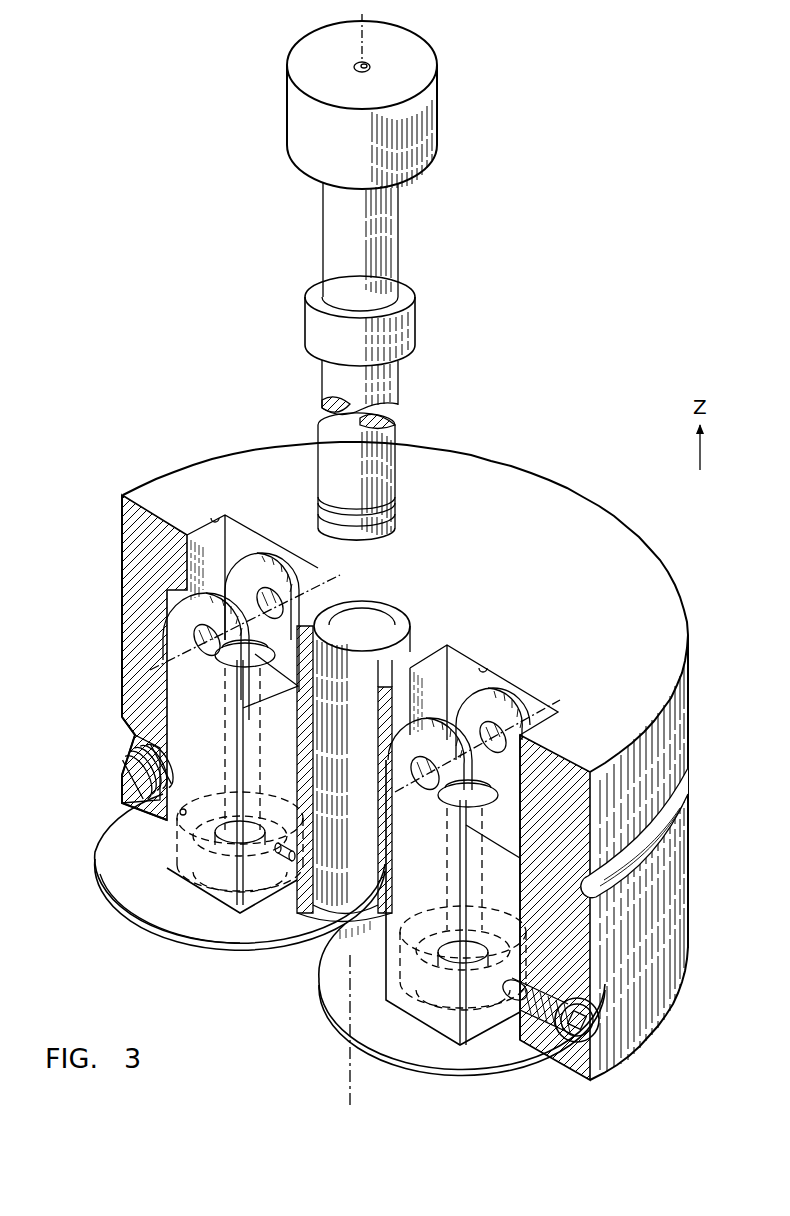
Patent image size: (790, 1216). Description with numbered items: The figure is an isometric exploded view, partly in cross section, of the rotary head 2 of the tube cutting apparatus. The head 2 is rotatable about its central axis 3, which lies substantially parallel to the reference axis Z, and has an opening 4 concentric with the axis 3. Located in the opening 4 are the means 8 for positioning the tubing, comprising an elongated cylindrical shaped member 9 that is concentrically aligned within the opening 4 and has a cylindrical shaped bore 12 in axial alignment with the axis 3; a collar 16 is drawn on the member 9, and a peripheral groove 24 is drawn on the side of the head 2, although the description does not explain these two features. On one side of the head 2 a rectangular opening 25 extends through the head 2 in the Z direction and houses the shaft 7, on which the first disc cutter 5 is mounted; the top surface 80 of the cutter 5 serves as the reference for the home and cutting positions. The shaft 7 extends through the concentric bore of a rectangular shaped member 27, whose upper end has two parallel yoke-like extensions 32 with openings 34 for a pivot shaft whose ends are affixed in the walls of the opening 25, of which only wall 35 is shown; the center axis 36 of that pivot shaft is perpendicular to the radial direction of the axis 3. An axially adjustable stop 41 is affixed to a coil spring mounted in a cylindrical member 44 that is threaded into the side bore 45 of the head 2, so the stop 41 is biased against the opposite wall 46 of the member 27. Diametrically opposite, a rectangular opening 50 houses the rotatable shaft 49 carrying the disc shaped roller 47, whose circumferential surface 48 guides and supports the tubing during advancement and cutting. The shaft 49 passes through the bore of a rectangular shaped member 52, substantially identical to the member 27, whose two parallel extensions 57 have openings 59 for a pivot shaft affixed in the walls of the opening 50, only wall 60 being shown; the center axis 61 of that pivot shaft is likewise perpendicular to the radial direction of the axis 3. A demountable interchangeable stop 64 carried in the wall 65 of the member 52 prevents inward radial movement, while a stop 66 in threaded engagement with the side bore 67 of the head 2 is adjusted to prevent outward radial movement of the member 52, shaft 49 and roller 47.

The head 2 is at (689, 720).
The central axis 3 is at (356, 10).
The opening 4 is at (378, 660).
The first disc cutter 5 is at (447, 1074).
The shaft 7 is at (447, 887).
The means for positioning the tubing 8 is at (440, 108).
The elongated cylindrical shaped member 9 is at (399, 232).
The cylindrical shaped bore 12 is at (370, 66).
The collar 16 is at (408, 324).
The circumferential slot 24 is at (676, 812).
The rectangular opening 25 is at (486, 669).
The rectangular shaped member 27 is at (498, 855).
The extensions 32 is at (500, 704).
The openings 34 is at (482, 736).
The wall 35 is at (470, 685).
The center axis 36 is at (392, 788).
The axially adjustable stop 41 is at (512, 995).
The cylindrical member 44 is at (545, 1040).
The side bore 45 is at (600, 1021).
The opposite wall 46 is at (513, 893).
The disc shaped roller 47 is at (120, 877).
The circumferential surface 48 is at (199, 944).
The rotatable shaft 49 is at (226, 744).
The rectangular opening 50 is at (216, 522).
The rectangular shaped member 52 is at (181, 814).
The extensions 57 is at (270, 570).
The openings 59 is at (214, 654).
The wall 60 is at (250, 553).
The center axis 61 is at (258, 612).
The demountable interchangeable stop 64 is at (285, 862).
The wall 65 is at (288, 757).
The stop 66 is at (138, 782).
The side bore 67 is at (132, 741).
The top surface 80 is at (413, 1043).